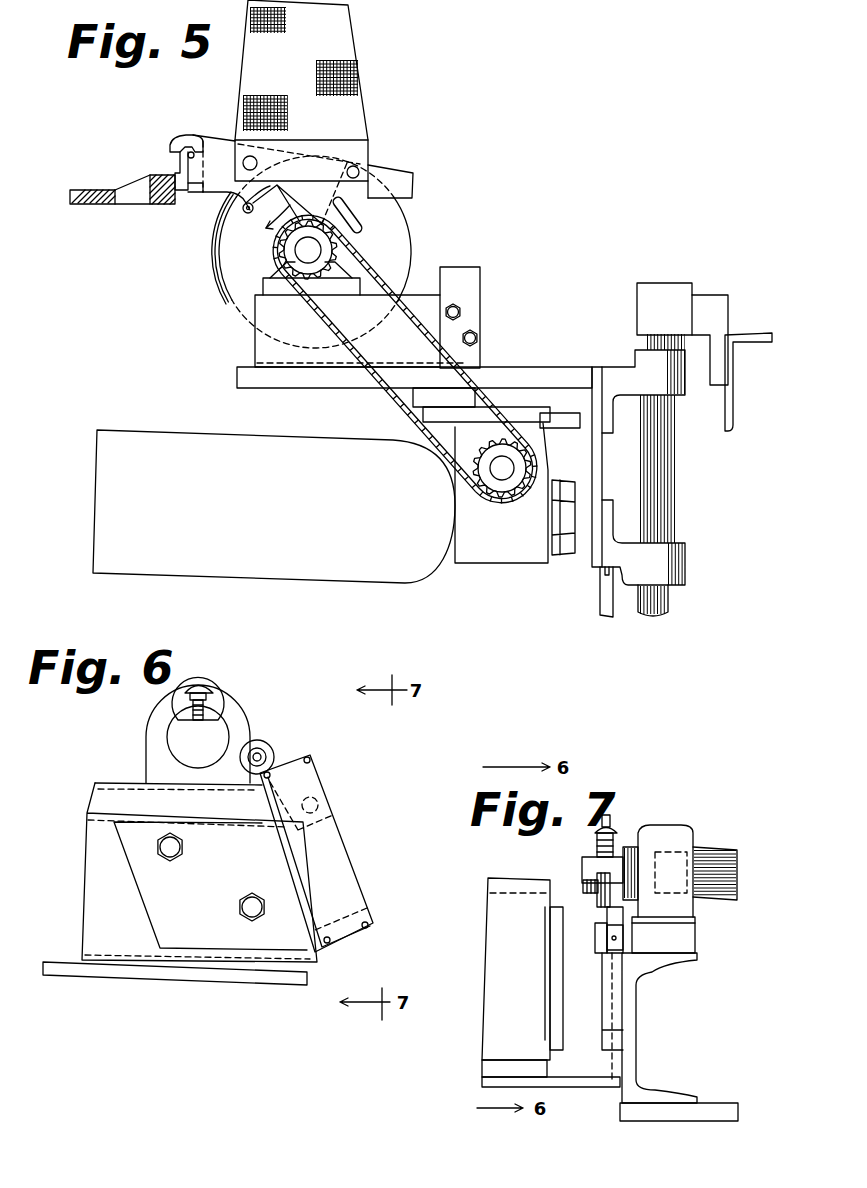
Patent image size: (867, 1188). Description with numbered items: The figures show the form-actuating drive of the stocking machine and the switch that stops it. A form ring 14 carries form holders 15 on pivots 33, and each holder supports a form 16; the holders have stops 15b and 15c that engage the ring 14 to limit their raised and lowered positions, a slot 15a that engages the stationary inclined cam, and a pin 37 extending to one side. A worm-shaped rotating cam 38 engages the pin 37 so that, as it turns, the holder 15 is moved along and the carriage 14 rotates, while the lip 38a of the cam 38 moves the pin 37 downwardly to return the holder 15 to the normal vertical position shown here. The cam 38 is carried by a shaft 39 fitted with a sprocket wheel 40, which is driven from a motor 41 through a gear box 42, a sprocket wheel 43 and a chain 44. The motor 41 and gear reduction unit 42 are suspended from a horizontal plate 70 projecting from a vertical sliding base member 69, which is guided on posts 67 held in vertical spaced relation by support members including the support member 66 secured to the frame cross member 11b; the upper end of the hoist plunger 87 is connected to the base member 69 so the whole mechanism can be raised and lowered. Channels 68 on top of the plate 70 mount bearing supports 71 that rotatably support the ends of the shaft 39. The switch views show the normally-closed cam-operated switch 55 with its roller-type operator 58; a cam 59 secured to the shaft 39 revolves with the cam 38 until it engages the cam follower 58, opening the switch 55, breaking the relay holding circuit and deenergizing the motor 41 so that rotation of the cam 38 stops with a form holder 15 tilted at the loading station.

In FIG. 5, the cross member 11b is at (733, 413).
In FIG. 5, the form ring 14 is at (87, 192).
In FIG. 5, the form holder 15 is at (388, 175).
In FIG. 5, the slot 15a is at (365, 215).
In FIG. 5, the stop 15b is at (170, 152).
In FIG. 5, the stop 15c is at (191, 198).
In FIG. 5, the form 16 is at (326, 43).
In FIG. 5, the pivot 33 is at (192, 151).
In FIG. 5, the pin 37 is at (246, 212).
In FIG. 5, the rotating cam 38 is at (400, 223).
In FIG. 5, the lip 38a is at (225, 281).
In FIG. 5, the shaft 39 is at (310, 250).
In FIG. 6, the shaft 39 is at (205, 737).
In FIG. 7, the shaft 39 is at (713, 860).
In FIG. 5, the sprocket wheel 40 is at (292, 253).
In FIG. 5, the motor 41 is at (357, 572).
In FIG. 5, the gear box 42 is at (472, 552).
In FIG. 5, the sprocket wheel 43 is at (500, 488).
In FIG. 5, the chain 44 is at (358, 272).
In FIG. 6, the switch 55 is at (328, 843).
In FIG. 7, the switch 55 is at (572, 1007).
In FIG. 6, the roller-type operator 58 is at (268, 752).
In FIG. 7, the roller-type operator 58 is at (588, 885).
In FIG. 6, the cam 59 is at (202, 693).
In FIG. 7, the cam 59 is at (617, 830).
In FIG. 5, the support member 66 is at (695, 302).
In FIG. 5, the post 67 is at (650, 605).
In FIG. 5, the channel 68 is at (332, 357).
In FIG. 6, the channel 68 is at (95, 870).
In FIG. 7, the channel 68 is at (627, 1008).
In FIG. 5, the sliding base member 69 is at (597, 370).
In FIG. 5, the horizontal plate 70 is at (240, 368).
In FIG. 6, the horizontal plate 70 is at (150, 968).
In FIG. 7, the horizontal plate 70 is at (630, 1108).
In FIG. 5, the bearing support 71 is at (282, 283).
In FIG. 6, the bearing support 71 is at (157, 733).
In FIG. 7, the bearing support 71 is at (680, 907).
In FIG. 5, the plunger 87 is at (602, 605).